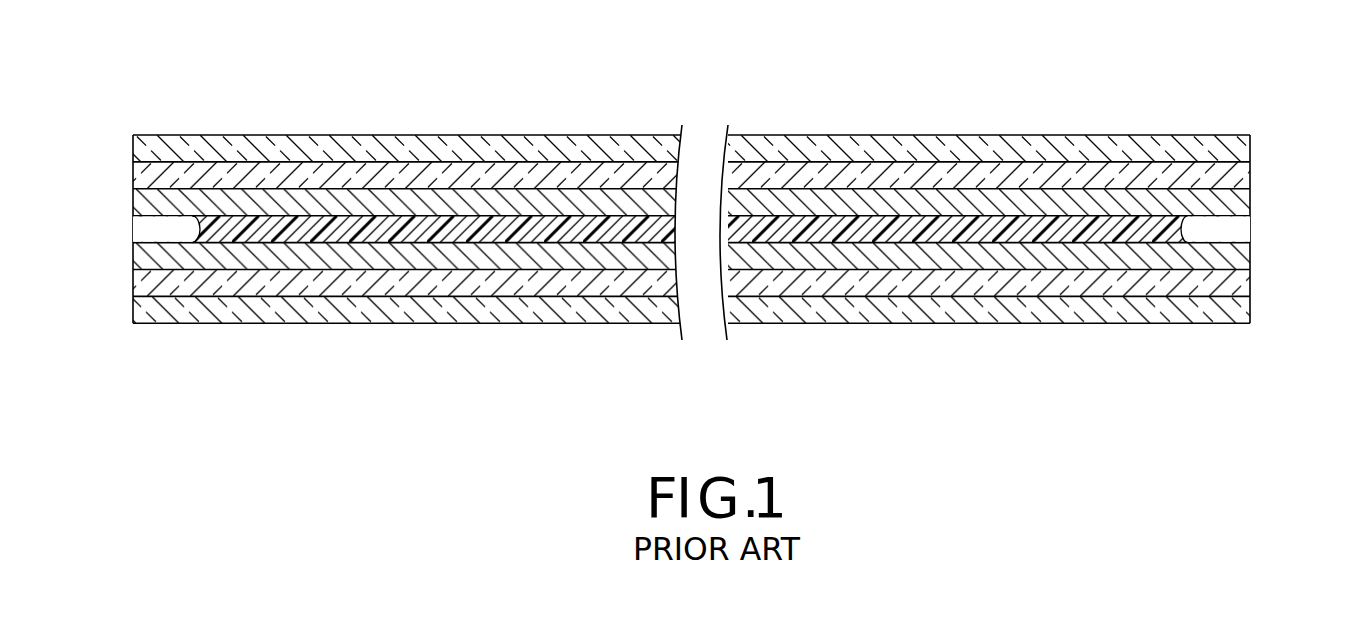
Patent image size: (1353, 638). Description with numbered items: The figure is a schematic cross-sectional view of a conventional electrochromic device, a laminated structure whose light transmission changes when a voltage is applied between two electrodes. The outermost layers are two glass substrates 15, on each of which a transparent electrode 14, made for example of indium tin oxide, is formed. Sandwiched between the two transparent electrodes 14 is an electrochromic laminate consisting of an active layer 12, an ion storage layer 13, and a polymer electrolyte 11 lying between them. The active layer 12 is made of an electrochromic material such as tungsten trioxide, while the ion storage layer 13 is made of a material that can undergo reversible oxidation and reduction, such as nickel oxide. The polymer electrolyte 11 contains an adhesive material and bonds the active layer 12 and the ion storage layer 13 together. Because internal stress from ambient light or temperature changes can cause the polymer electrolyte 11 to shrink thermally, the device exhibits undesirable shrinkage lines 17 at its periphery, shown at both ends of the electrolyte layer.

The polymer electrolyte 11 is at (1055, 233).
The active layer 12 is at (862, 210).
The ion storage layer 13 is at (880, 257).
The transparent electrode 14 is at (952, 175).
The glass substrate 15 is at (1016, 152).
The shrinkage line 17 is at (153, 229).